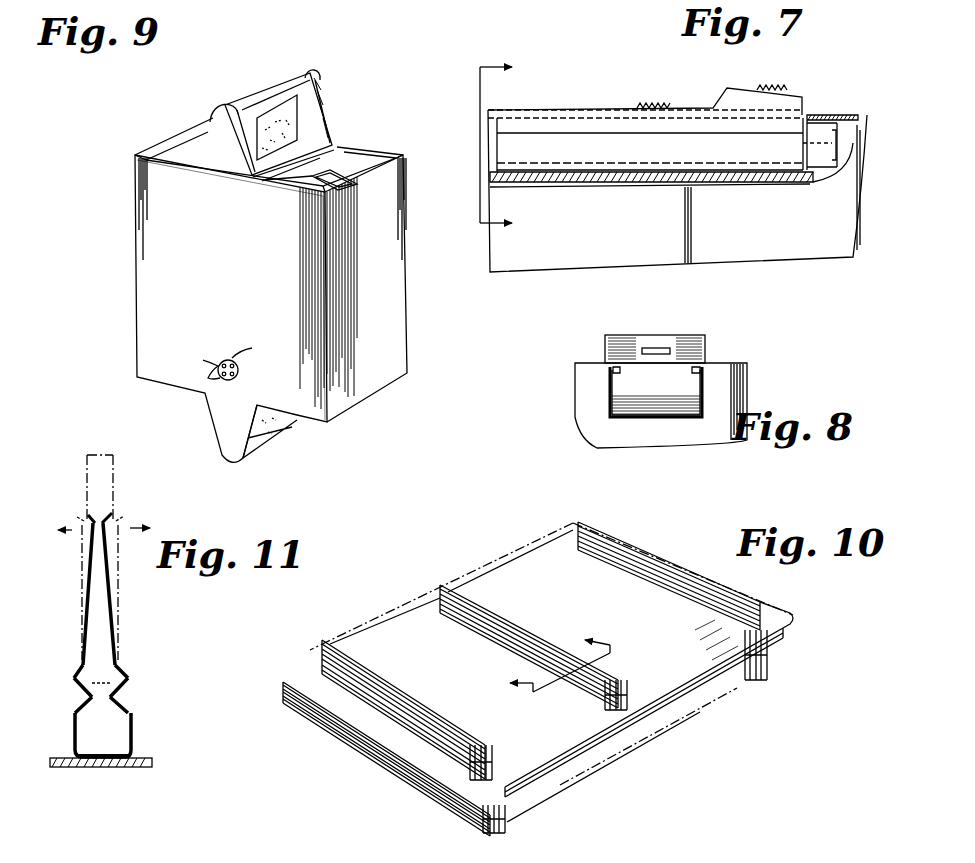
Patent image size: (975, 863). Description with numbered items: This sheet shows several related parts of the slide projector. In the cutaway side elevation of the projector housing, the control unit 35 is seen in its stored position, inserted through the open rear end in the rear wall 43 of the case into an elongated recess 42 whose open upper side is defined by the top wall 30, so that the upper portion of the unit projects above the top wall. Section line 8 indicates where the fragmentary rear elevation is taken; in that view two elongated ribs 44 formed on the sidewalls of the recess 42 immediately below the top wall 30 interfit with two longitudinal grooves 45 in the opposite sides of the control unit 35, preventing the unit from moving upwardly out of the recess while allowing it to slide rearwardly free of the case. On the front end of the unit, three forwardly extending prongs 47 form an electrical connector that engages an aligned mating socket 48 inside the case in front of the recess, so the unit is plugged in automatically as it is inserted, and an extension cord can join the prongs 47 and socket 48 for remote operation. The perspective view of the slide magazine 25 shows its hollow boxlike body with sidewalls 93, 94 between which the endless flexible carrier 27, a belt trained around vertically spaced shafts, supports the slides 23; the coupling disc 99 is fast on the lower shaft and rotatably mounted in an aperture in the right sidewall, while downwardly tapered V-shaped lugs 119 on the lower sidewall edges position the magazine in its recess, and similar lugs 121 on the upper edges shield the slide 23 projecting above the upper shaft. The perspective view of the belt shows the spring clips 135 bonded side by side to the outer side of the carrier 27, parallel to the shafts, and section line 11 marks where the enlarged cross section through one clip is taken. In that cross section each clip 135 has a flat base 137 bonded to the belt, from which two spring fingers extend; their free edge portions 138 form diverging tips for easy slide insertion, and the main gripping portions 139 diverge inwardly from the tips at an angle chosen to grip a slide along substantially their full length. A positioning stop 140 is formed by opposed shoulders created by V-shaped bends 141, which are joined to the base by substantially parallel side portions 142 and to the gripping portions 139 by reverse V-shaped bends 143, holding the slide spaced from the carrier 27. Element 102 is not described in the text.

In FIG. 7, the section line 8— 8 is at (508, 146).
In FIG. 10, the section line 11— 11 is at (555, 658).
In FIG. 9, the slides 23 is at (272, 92).
In FIG. 9, the slide magazine 25 is at (412, 311).
In FIG. 9, the endless flexible carrier 27 is at (280, 167).
In FIG. 10, the endless flexible carrier 27 is at (600, 563).
In FIG. 11, the endless flexible carrier 27 is at (127, 768).
In FIG. 7, the top wall 30 is at (817, 115).
In FIG. 8, the top wall 30 is at (713, 363).
In FIG. 7, the control unit 35 is at (543, 105).
In FIG. 8, the control unit 35 is at (600, 413).
In FIG. 7, the elongated recess 42 is at (640, 177).
In FIG. 8, the elongated recess 42 is at (697, 410).
In FIG. 7, the rear wall 43 is at (483, 257).
In FIG. 8, the rear wall 43 is at (661, 405).
In FIG. 8, the elongated ribs 44 is at (692, 368).
In FIG. 7, the longitudinal grooves 45 is at (593, 132).
In FIG. 8, the longitudinal grooves 45 is at (613, 377).
In FIG. 7, the prongs 47 is at (807, 145).
In FIG. 7, the socket 48 is at (823, 160).
In FIG. 9, the sidewall 93 is at (231, 290).
In FIG. 9, the sidewall 94 is at (370, 158).
In FIG. 9, the coupling disc 99 is at (243, 373).
In FIG. 9, the hooks 102 is at (206, 362).
In FIG. 9, the V-shaped lugs 119 is at (227, 460).
In FIG. 9, the lugs 121 is at (225, 125).
In FIG. 9, the spring clips 135 is at (322, 152).
In FIG. 10, the spring clips 135 is at (583, 517).
In FIG. 11, the spring clips 135 is at (143, 632).
In FIG. 11, the flat base 137 is at (87, 752).
In FIG. 11, the free edge portions 138 is at (95, 520).
In FIG. 11, the main gripping portions 139 is at (87, 628).
In FIG. 11, the positioning stop 140 is at (91, 681).
In FIG. 11, the bends 141 is at (80, 688).
In FIG. 11, the side portions 142 is at (73, 730).
In FIG. 11, the reverse V-shaped bends 143 is at (81, 663).